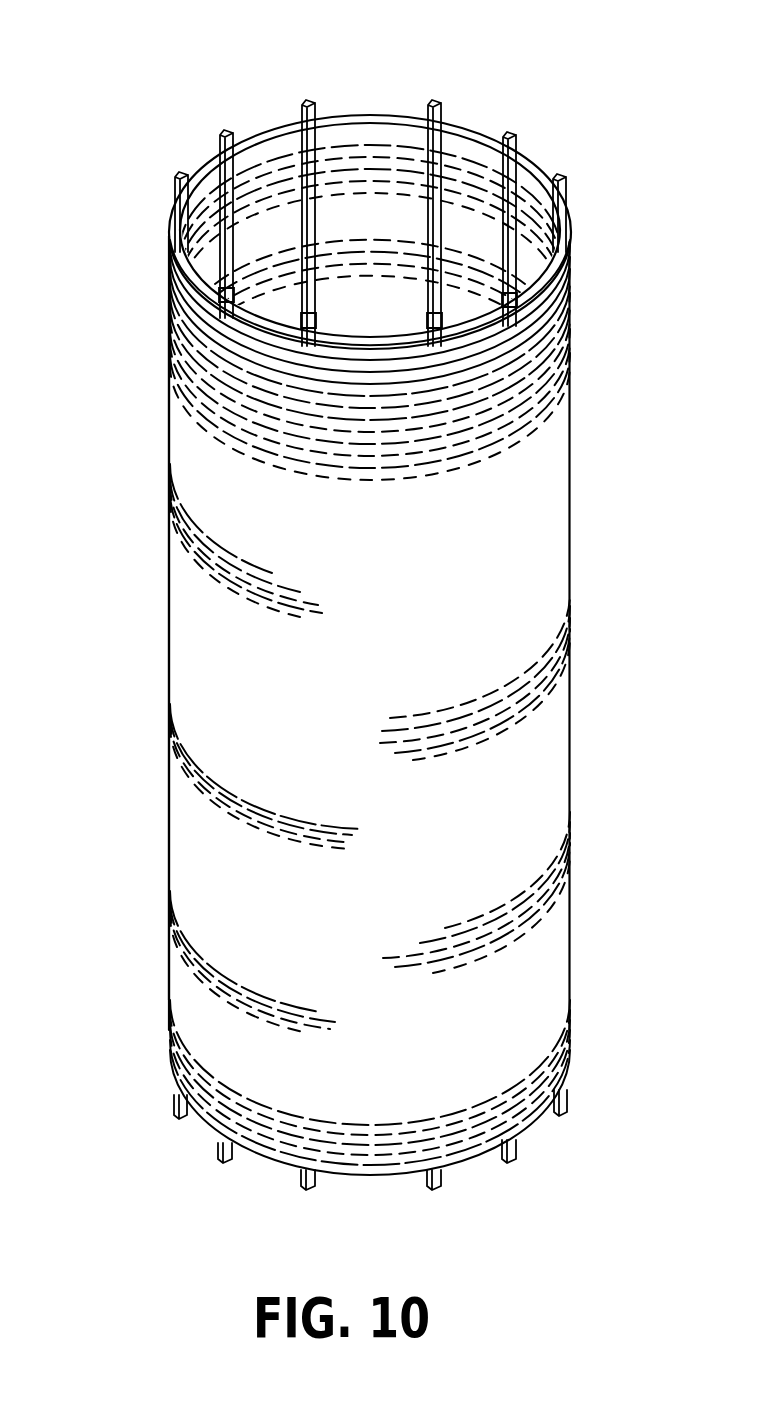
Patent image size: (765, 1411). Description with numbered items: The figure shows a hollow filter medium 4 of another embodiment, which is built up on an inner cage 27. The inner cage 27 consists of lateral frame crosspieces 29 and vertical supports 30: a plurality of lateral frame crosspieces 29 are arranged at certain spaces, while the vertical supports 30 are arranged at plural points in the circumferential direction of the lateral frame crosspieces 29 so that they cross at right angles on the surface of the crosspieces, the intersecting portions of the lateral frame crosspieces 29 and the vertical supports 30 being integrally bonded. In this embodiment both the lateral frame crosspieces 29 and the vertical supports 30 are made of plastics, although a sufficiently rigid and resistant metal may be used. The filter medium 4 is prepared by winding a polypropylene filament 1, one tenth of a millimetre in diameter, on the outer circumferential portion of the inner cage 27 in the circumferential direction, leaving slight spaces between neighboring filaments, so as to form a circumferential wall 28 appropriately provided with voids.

The polypropylene filament 1 is at (190, 400).
The filter medium 4 is at (545, 531).
The inner cage 27 is at (387, 123).
The circumferential wall 28 is at (184, 620).
The lateral frame crosspieces 29 is at (530, 168).
The vertical supports 30 is at (518, 134).